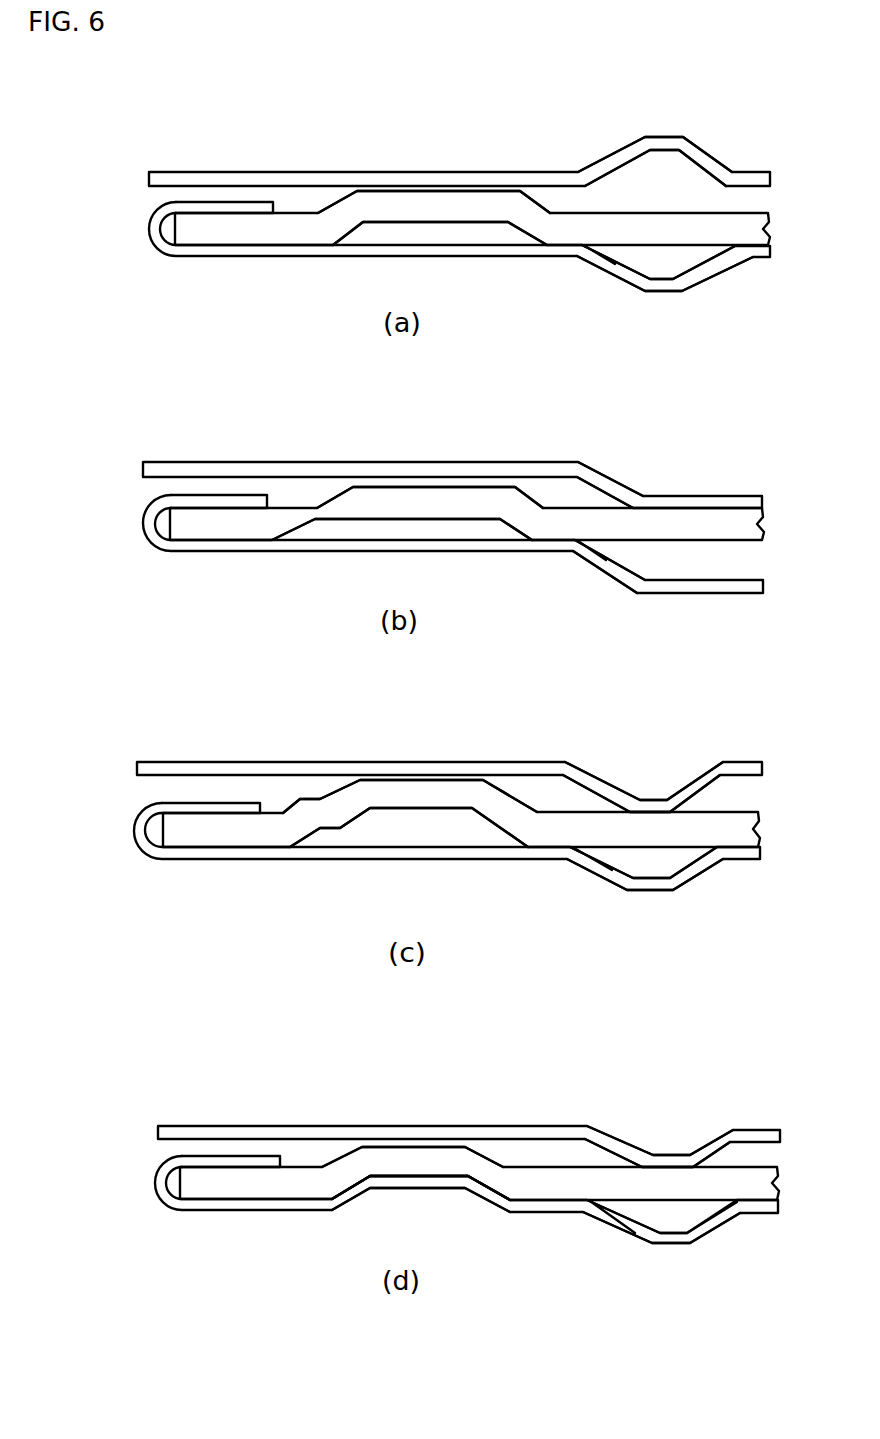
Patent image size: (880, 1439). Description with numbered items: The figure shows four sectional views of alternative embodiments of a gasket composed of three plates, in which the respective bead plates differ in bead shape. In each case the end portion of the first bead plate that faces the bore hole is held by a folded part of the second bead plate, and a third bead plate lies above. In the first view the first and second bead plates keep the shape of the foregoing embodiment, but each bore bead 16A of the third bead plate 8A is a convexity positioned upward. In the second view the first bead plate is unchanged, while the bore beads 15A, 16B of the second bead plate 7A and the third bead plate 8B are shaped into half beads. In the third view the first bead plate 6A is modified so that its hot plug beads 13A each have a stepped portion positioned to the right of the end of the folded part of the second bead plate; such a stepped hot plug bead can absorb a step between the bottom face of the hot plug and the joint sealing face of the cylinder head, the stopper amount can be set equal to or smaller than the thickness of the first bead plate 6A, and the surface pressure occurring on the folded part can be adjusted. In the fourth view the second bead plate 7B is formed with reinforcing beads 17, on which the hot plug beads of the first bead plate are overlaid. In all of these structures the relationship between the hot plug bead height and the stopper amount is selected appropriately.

The first bead plate 6A is at (461, 818).
The second bead plate 7A is at (453, 536).
The second bead plate 7B is at (468, 1188).
The third bead plate 8A is at (462, 135).
The third bead plate 8B is at (452, 473).
The hot plug bead 13A is at (447, 788).
The bore bead 15A is at (658, 590).
The bore bead 16A is at (657, 135).
The bore bead 16B is at (667, 500).
The reinforcing bead 17 is at (410, 1188).